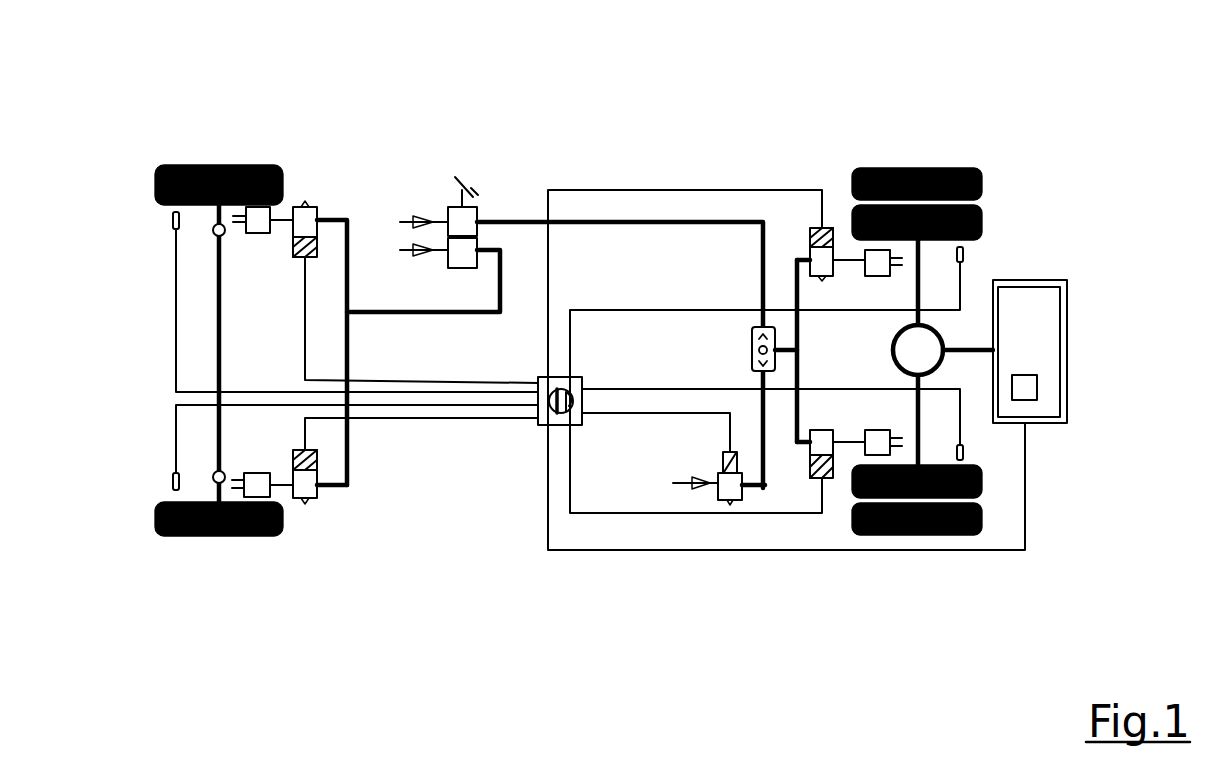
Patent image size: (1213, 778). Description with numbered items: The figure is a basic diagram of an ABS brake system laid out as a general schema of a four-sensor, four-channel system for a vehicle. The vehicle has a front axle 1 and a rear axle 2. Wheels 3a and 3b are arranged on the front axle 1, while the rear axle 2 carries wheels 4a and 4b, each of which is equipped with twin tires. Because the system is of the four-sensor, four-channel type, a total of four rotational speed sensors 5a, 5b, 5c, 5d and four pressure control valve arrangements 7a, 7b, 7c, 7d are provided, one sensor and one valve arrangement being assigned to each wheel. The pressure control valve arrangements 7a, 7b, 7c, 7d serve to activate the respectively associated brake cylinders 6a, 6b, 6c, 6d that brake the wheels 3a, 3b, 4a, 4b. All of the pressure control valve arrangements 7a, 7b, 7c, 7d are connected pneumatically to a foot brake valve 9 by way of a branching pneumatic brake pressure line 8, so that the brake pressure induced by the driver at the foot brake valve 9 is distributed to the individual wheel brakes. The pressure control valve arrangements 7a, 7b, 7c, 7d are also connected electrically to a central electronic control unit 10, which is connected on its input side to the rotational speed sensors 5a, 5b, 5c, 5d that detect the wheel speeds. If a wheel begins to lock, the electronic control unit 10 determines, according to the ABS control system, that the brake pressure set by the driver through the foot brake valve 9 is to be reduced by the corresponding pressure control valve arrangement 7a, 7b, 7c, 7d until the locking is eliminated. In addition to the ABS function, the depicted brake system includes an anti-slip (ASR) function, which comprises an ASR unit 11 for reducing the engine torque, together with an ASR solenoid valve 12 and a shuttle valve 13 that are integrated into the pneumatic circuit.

The front axle 1 is at (226, 146).
The rear axle 2 is at (931, 140).
The wheel 3a is at (155, 181).
The wheel 3b is at (155, 517).
The wheel 4a is at (982, 183).
The wheel 4b is at (982, 515).
The rotational speed sensor 5a is at (170, 222).
The rotational speed sensor 5b is at (170, 480).
The rotational speed sensor 5c is at (962, 248).
The rotational speed sensor 5d is at (963, 452).
The brake cylinder 6a is at (255, 233).
The brake cylinder 6b is at (258, 473).
The brake cylinder 6c is at (873, 268).
The brake cylinder 6d is at (878, 440).
The pressure control valve arrangement 7a is at (300, 257).
The pressure control valve arrangement 7b is at (305, 478).
The pressure control valve arrangement 7c is at (825, 270).
The pressure control valve arrangement 7d is at (822, 440).
The pneumatic brake pressure line 8 is at (647, 222).
The foot brake valve 9 is at (458, 220).
The electronic control unit 10 is at (547, 426).
The ASR unit 11 is at (1040, 356).
The ASR solenoid valve 12 is at (723, 478).
The shuttle valve 13 is at (752, 358).